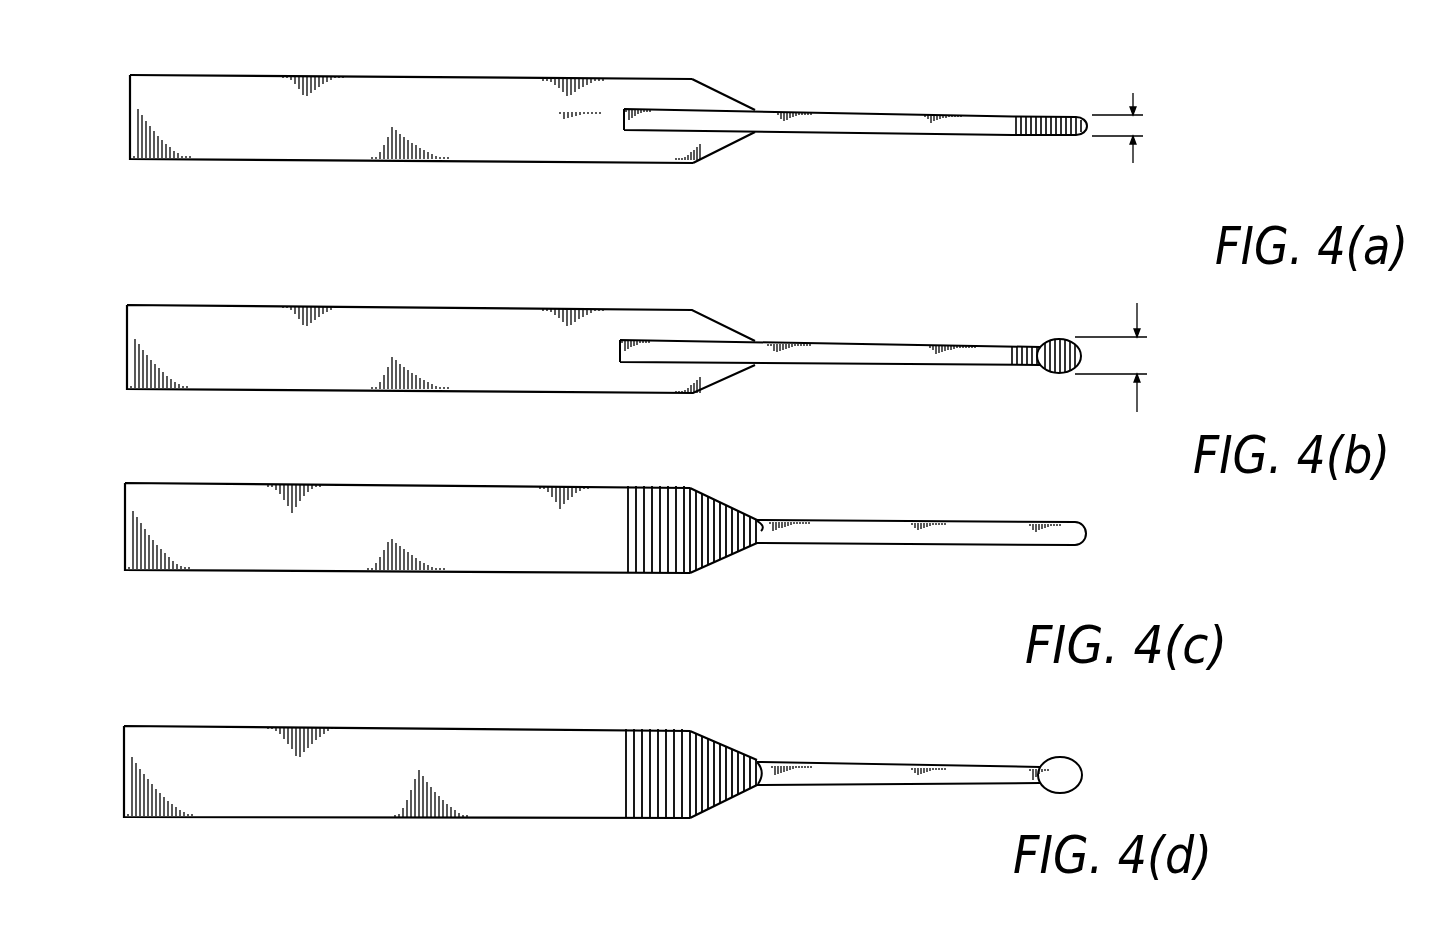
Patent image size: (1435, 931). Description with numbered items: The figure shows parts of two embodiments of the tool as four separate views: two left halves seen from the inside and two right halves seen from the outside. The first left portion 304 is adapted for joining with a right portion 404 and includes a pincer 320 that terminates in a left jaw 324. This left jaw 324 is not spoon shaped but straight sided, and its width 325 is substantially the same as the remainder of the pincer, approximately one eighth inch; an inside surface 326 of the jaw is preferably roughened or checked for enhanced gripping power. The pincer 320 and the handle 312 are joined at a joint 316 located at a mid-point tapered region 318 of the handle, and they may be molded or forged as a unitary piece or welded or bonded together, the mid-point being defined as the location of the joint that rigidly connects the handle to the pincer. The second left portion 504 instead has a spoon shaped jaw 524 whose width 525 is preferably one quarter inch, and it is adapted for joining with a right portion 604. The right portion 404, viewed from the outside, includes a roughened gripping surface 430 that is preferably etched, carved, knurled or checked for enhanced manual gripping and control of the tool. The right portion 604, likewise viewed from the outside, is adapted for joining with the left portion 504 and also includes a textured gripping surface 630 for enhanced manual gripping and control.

In FIG. 4A, the left portion 304 is at (521, 78).
In FIG. 4A, the handle 312 is at (357, 88).
In FIG. 4A, the joint 316 is at (653, 109).
In FIG. 4A, the mid-point tapered region 318 is at (698, 162).
In FIG. 4A, the pincer 320 is at (851, 133).
In FIG. 4A, the left jaw 324 is at (1068, 70).
In FIG. 4A, the width 325 is at (1133, 158).
In FIG. 4A, the inside surface 326 is at (1028, 137).
In FIG. 4B, the left portion 504 is at (483, 305).
In FIG. 4B, the spoon shaped jaw 524 is at (1055, 338).
In FIG. 4B, the width 525 is at (1137, 403).
In FIG. 4C, the right portion 404 is at (563, 488).
In FIG. 4C, the roughened gripping surface 430 is at (683, 525).
In FIG. 4D, the right portion 604 is at (587, 730).
In FIG. 4D, the textured gripping surface 630 is at (673, 758).